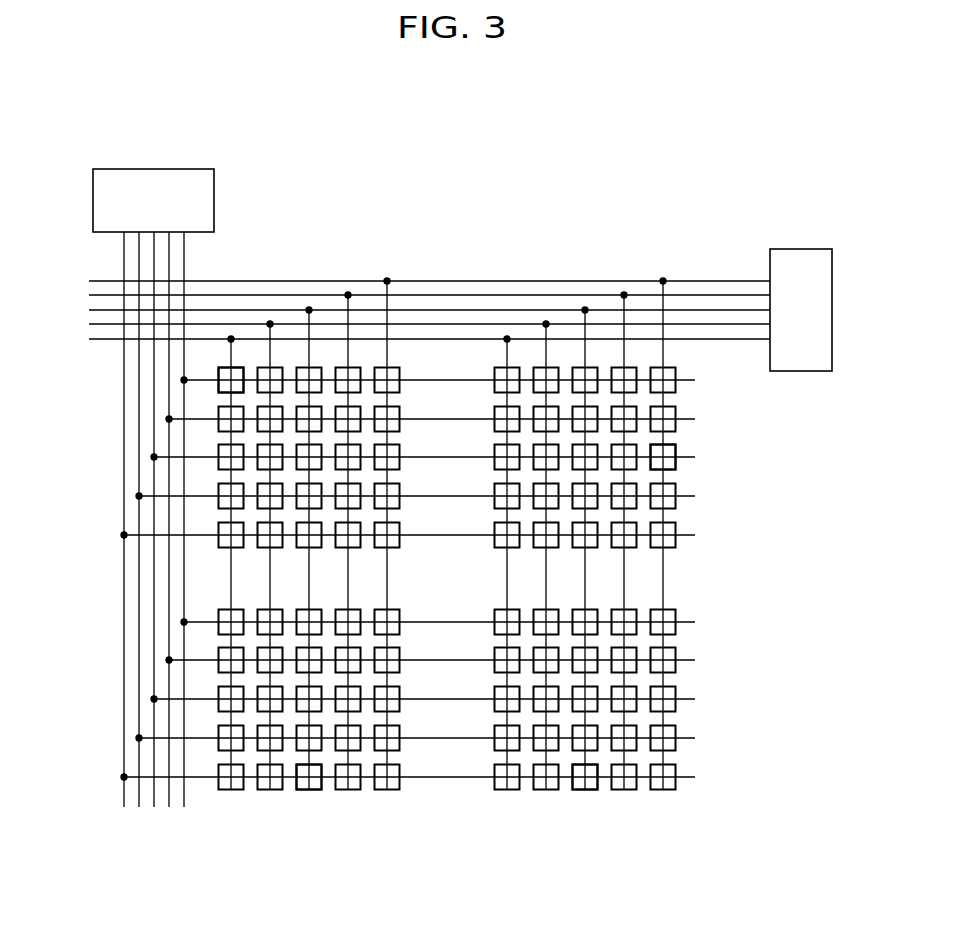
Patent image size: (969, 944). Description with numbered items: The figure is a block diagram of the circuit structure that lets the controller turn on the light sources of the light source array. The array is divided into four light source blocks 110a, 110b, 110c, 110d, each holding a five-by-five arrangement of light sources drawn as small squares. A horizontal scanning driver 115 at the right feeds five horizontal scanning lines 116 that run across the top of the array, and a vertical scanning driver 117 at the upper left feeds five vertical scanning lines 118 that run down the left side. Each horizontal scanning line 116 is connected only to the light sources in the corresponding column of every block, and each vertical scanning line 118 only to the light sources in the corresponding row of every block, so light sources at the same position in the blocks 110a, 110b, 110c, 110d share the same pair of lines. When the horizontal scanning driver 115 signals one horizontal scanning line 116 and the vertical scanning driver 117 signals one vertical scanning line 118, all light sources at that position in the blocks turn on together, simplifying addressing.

The vertical scanning driver 117 is at (152, 172).
The horizontal scanning driver 115 is at (804, 250).
The horizontal scanning lines 116 is at (703, 269).
The vertical scanning lines 118 is at (119, 799).
The light source block 110a is at (406, 355).
The light source block 110b is at (717, 456).
The light source block 110c is at (582, 818).
The light source block 110d is at (306, 818).